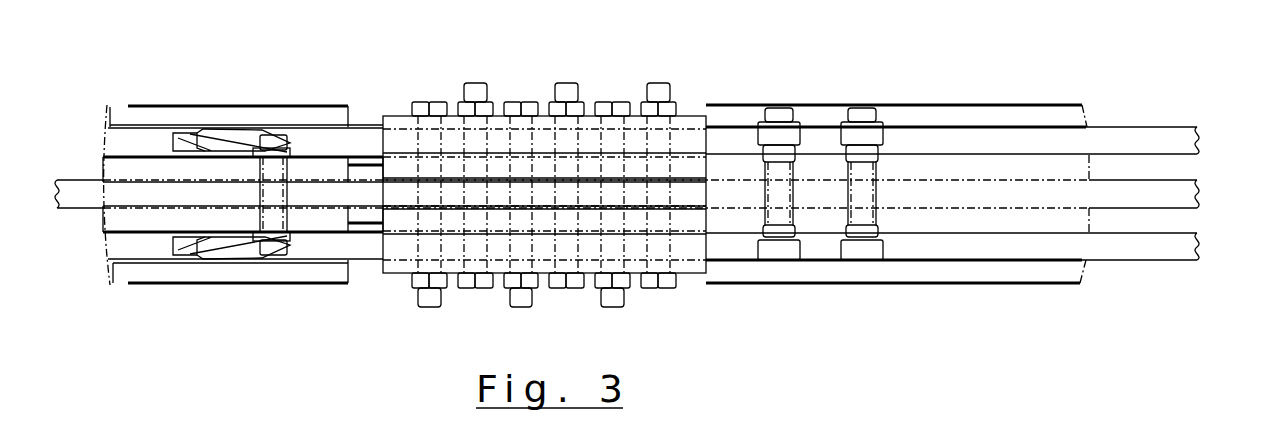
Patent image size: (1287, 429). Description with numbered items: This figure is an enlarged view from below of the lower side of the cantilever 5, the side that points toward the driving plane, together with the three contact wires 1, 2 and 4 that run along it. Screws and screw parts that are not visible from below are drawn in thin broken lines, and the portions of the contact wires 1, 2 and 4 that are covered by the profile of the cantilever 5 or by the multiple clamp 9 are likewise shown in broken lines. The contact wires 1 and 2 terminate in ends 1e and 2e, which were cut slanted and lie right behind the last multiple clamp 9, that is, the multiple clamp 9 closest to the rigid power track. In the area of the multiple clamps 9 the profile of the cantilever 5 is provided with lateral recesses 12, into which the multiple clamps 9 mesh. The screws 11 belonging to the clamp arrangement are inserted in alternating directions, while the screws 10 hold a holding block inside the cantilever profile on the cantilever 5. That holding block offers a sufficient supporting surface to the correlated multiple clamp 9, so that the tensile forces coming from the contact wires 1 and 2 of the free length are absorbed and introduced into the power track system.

The contact wire 1 is at (1181, 137).
The contact wire 2 is at (1185, 258).
The contact wire 4 is at (1197, 193).
The cantilever 5 is at (222, 112).
The multiple clamp 9 is at (547, 107).
The screw 10 is at (780, 111).
The screw 11 is at (474, 90).
The lateral recess 12 is at (370, 113).
The end of contact wire 1e is at (186, 143).
The end of contact wire 2e is at (184, 247).